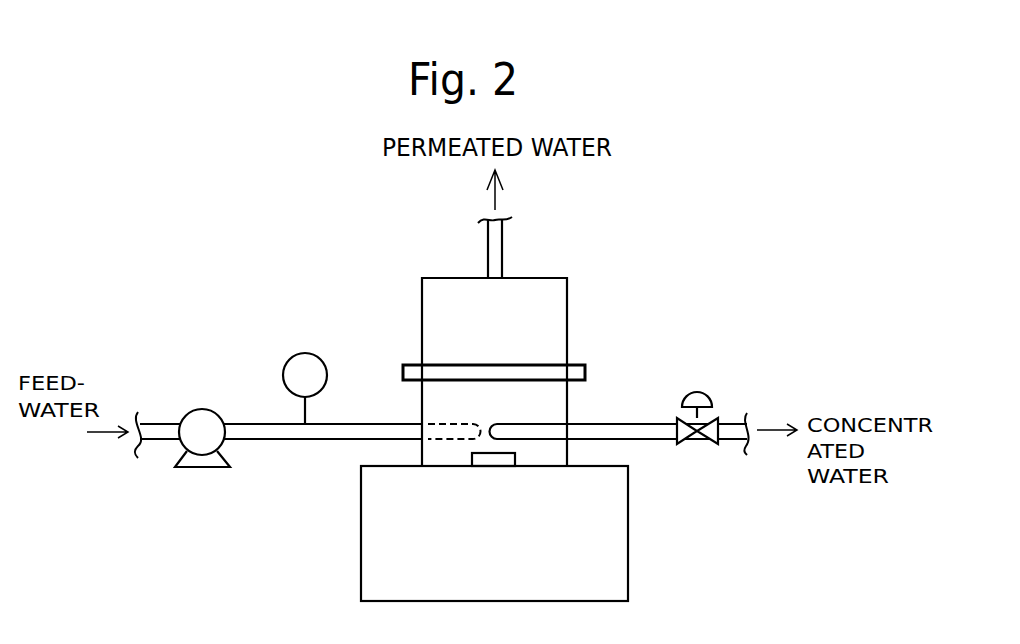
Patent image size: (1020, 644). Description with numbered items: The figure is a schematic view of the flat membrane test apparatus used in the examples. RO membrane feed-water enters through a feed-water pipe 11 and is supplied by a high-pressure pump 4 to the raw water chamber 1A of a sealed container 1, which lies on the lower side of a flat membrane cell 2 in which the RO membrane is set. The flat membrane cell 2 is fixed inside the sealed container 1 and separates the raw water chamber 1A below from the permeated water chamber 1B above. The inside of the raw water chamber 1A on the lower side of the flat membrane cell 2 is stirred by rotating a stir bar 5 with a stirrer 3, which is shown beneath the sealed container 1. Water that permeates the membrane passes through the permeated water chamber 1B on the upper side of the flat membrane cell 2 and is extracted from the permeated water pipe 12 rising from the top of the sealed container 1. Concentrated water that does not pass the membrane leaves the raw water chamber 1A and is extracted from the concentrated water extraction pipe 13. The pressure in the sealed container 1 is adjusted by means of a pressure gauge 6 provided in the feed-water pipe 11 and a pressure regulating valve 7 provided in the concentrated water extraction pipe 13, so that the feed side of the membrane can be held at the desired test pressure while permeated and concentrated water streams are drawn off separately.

The sealed container 1 is at (568, 305).
The raw water chamber 1A is at (450, 398).
The permeated water chamber 1B is at (537, 310).
The flat membrane cell 2 is at (466, 364).
The stirrer 3 is at (610, 563).
The high-pressure pump 4 is at (195, 412).
The stir bar 5 is at (512, 457).
The pressure gauge 6 is at (300, 353).
The pressure regulating valve 7 is at (700, 393).
The feed-water pipe 11 is at (245, 424).
The permeated water pipe 12 is at (487, 258).
The concentrated water extraction pipe 13 is at (728, 440).